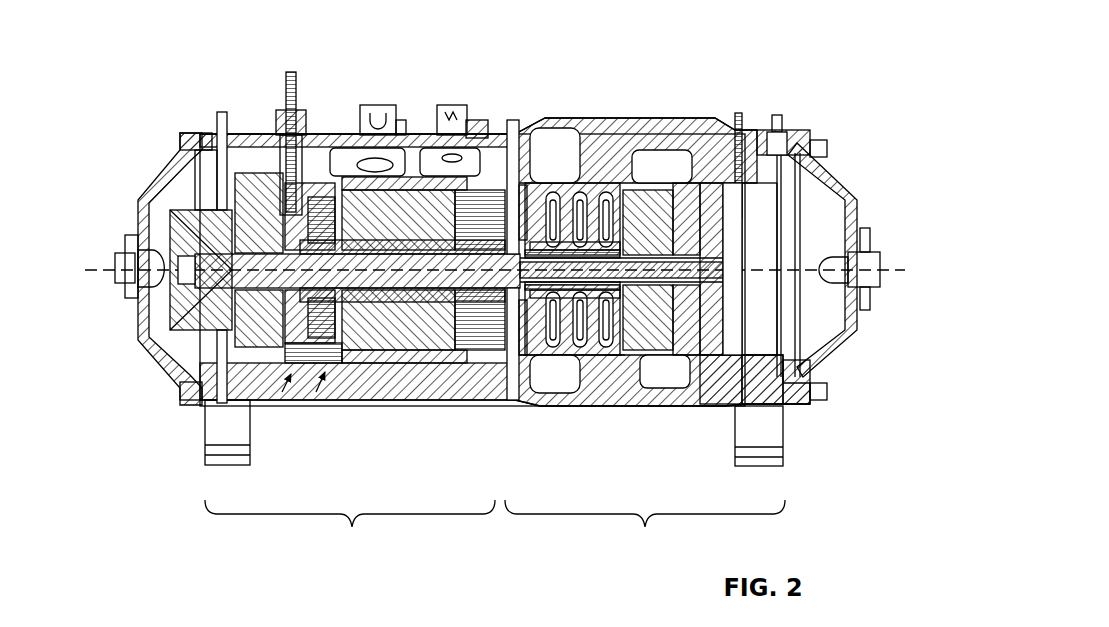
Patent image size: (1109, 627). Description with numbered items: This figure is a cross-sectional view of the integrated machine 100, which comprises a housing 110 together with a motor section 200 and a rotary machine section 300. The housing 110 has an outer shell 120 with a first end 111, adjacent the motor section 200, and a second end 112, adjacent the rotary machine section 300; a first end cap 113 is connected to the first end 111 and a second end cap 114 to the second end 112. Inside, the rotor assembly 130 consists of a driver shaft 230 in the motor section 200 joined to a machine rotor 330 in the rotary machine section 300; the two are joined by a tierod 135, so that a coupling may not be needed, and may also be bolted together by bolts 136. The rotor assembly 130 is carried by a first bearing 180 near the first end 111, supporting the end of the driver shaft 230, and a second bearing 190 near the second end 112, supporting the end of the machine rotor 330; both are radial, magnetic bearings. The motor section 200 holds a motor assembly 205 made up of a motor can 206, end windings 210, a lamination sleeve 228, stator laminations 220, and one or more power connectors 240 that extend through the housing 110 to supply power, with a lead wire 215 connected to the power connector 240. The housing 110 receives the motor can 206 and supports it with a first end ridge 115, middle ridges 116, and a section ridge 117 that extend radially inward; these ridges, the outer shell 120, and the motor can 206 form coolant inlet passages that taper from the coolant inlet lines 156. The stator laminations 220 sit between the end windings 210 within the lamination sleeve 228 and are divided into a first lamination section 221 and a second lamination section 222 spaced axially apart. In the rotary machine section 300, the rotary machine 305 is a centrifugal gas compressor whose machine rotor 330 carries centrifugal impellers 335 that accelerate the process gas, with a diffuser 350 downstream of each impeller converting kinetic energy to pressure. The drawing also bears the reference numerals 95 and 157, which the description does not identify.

The axis 95 is at (884, 266).
The integrated machine 100 is at (612, 20).
The housing 110 is at (627, 106).
The first end 111 is at (203, 140).
The second end 112 is at (795, 145).
The first end cap 113 is at (143, 210).
The second end cap 114 is at (840, 185).
The first end ridge 115 is at (267, 160).
The middle ridges 116 is at (343, 132).
The section ridge 117 is at (523, 200).
The outer shell 120 is at (312, 133).
The rotor assembly 130 is at (527, 330).
The tierod 135 is at (768, 385).
The bolts 136 is at (545, 250).
The coolant inlet lines 156 is at (300, 118).
The port 157 is at (392, 116).
The first bearing 180 is at (255, 292).
The second bearing 190 is at (720, 307).
The motor section 200 is at (350, 531).
The motor assembly 205 is at (277, 322).
The motor can 206 is at (470, 345).
The end windings 210 is at (185, 385).
The lead wire 215 is at (223, 200).
The stator laminations 220 is at (322, 372).
The first lamination section 221 is at (367, 370).
The second lamination section 222 is at (370, 363).
The lamination sleeve 228 is at (425, 347).
The driver shaft 230 is at (447, 253).
The power connectors 240 is at (290, 68).
The rotary machine section 300 is at (645, 531).
The rotary machine 305 is at (620, 370).
The machine rotor 330 is at (630, 320).
The centrifugal impellers 335 is at (560, 352).
The diffusers 350 is at (609, 374).